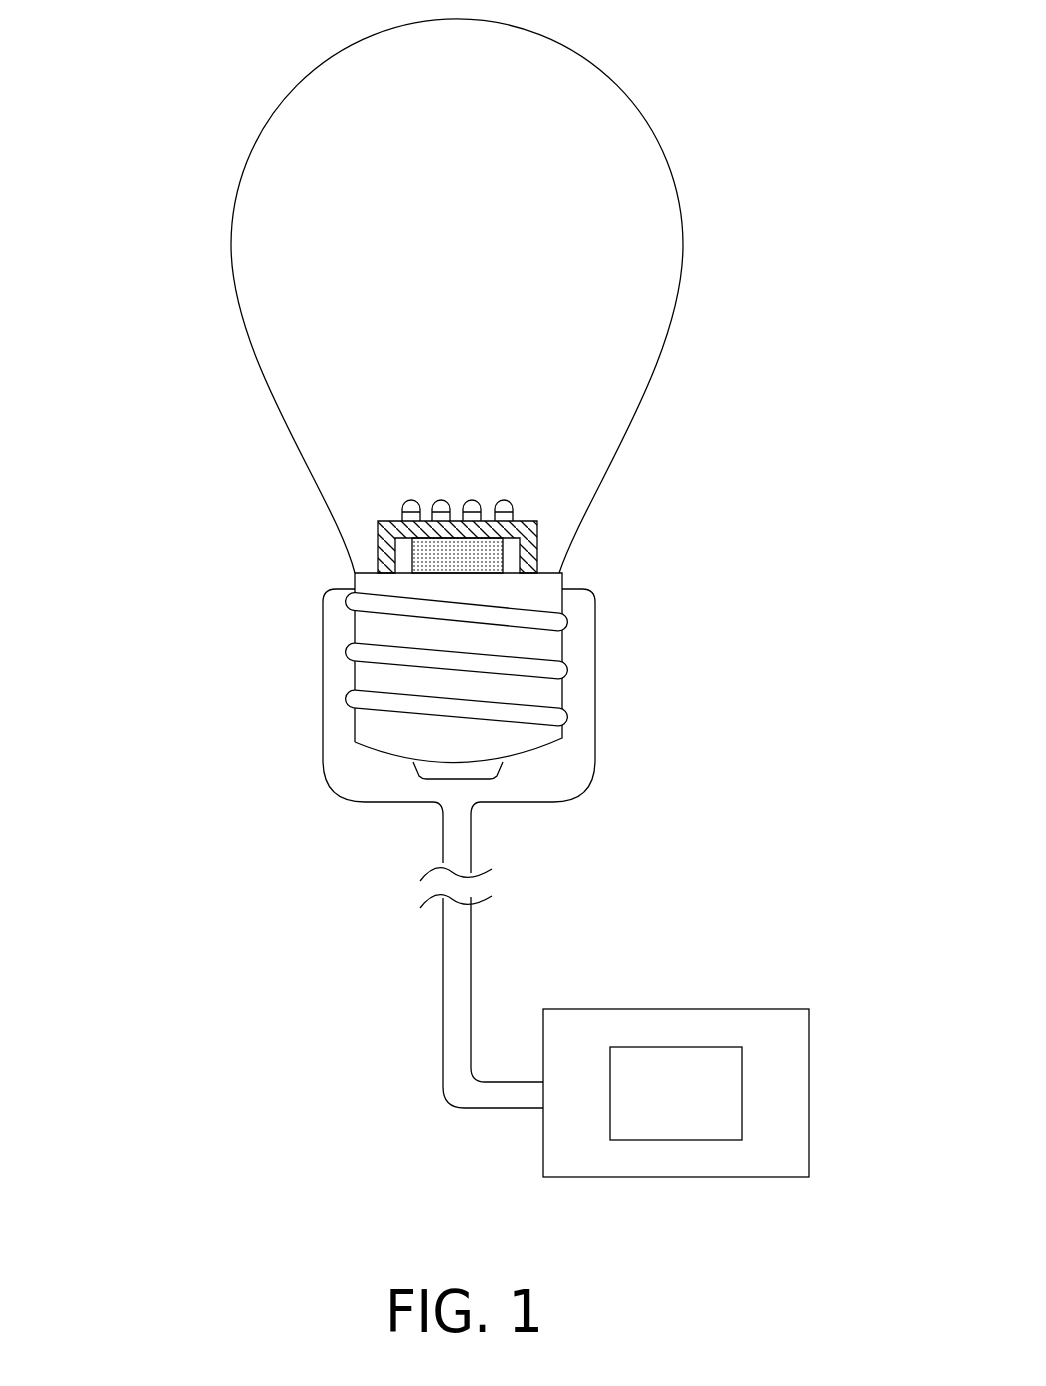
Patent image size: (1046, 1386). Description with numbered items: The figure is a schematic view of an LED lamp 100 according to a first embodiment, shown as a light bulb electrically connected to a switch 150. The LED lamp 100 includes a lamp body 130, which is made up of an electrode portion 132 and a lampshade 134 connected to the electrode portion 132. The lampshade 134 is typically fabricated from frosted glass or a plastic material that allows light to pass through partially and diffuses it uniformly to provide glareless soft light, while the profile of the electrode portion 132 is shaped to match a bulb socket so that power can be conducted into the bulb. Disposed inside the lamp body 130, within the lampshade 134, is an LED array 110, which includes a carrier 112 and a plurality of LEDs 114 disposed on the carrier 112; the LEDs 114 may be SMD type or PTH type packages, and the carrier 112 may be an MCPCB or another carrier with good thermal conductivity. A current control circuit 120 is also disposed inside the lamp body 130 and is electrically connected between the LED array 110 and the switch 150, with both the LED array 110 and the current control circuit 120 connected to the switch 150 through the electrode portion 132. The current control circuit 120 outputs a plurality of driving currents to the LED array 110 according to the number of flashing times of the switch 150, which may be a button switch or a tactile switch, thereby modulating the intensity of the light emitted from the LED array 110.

The LED lamp 100 is at (427, 563).
The LED array 110 is at (492, 486).
The carrier 112 is at (528, 549).
The LEDs 114 is at (503, 501).
The current control circuit 120 is at (437, 558).
The lamp body 130 is at (492, 835).
The electrode portion 132 is at (490, 685).
The lampshade 134 is at (647, 108).
The switch 150 is at (790, 1087).